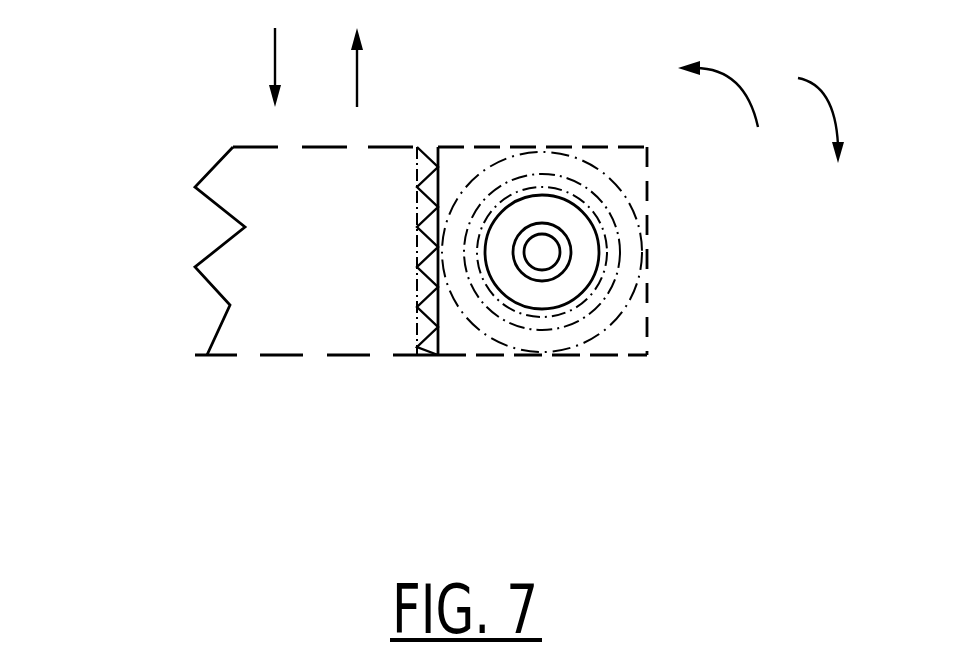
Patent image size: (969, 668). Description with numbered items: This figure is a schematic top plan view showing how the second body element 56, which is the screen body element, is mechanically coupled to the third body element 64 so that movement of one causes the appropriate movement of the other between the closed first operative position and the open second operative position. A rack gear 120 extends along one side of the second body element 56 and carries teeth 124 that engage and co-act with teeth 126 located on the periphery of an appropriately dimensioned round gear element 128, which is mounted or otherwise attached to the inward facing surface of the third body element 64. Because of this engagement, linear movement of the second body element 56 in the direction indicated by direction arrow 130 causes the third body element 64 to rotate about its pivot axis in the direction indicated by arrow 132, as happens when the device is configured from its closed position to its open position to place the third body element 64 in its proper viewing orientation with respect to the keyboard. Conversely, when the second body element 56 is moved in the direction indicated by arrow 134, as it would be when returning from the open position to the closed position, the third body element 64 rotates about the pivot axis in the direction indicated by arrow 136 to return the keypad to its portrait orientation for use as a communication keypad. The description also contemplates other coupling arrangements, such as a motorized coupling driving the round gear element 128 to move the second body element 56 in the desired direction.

The second body element 56 is at (236, 165).
The third body element 64 is at (648, 300).
The rack gear 120 is at (417, 108).
The teeth 124 is at (428, 152).
The teeth 126 is at (537, 150).
The round gear element 128 is at (590, 214).
The direction arrow 130 is at (353, 68).
The arrow 132 is at (838, 127).
The arrow 134 is at (272, 48).
The arrow 136 is at (738, 85).